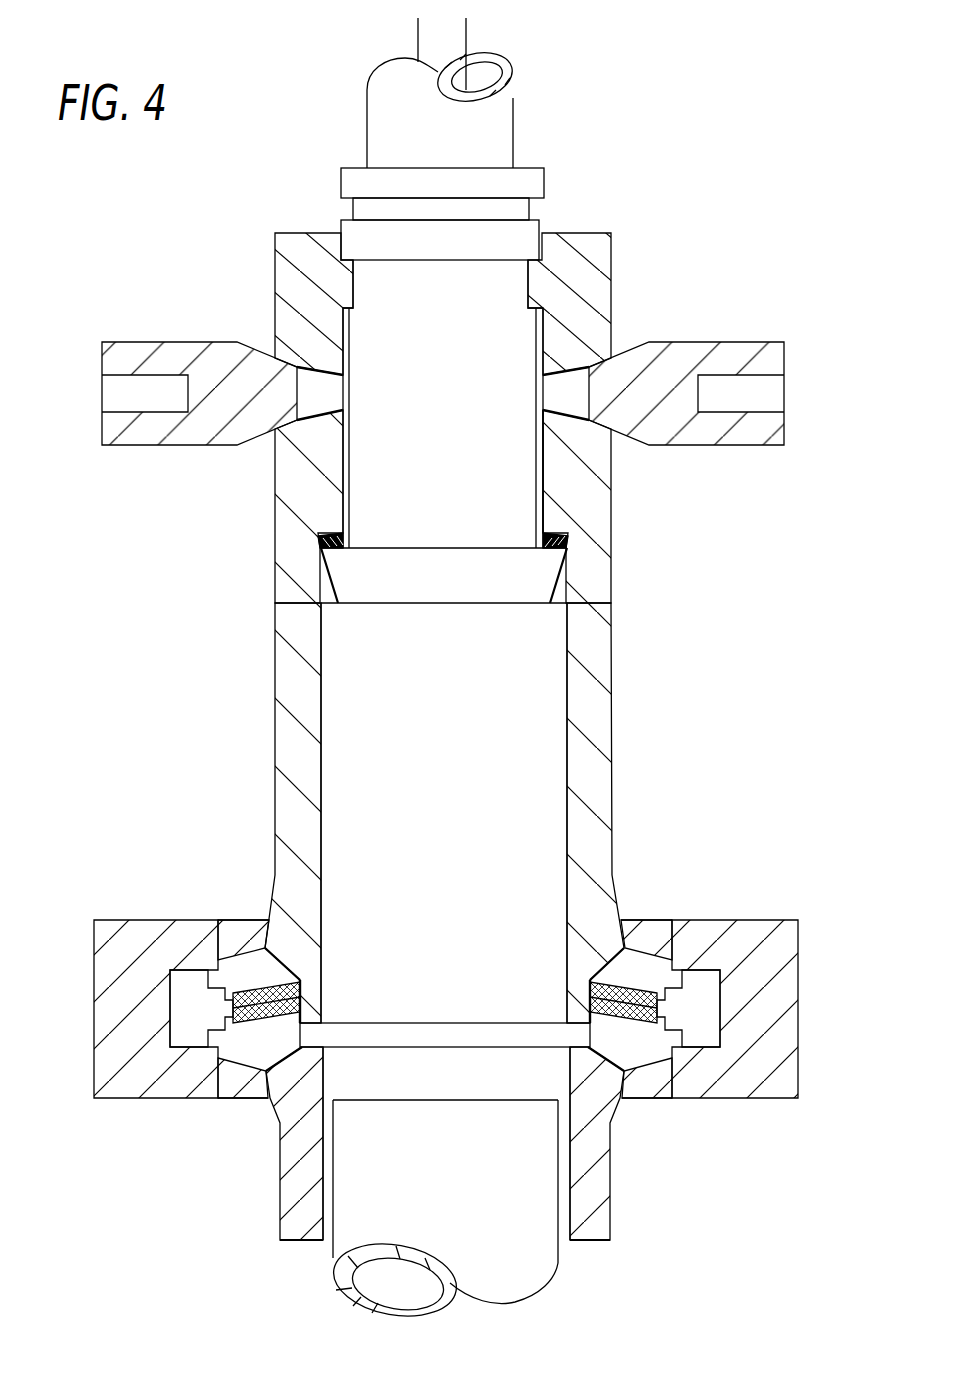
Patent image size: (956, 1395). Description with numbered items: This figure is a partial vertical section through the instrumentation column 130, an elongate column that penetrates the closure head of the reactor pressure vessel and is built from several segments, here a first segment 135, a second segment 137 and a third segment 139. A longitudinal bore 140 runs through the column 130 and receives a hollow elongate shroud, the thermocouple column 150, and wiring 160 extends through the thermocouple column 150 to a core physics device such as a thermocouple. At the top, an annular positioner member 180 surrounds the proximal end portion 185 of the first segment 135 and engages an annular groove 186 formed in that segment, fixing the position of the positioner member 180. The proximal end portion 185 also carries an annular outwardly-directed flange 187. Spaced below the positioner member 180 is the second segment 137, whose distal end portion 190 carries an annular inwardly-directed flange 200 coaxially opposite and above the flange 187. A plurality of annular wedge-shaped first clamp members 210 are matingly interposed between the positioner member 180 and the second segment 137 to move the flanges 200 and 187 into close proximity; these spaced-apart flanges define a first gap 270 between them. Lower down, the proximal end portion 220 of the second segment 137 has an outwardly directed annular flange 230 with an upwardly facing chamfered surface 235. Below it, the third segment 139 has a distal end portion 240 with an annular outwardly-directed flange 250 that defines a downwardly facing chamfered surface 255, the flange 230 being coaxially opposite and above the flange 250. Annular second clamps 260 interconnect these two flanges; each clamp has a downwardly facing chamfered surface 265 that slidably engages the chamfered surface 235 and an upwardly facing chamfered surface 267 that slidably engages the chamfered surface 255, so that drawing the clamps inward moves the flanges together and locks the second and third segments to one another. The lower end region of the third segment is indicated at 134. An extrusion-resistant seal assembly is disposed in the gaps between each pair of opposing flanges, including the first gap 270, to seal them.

The instrumentation column 130 is at (730, 202).
The lower end of sleeve 134 is at (296, 1224).
The first segment 135 is at (500, 119).
The second segment 137 is at (292, 745).
The third segment 139 is at (290, 1182).
The longitudinal bore 140 is at (556, 741).
The thermocouple column 150 is at (528, 1284).
The wiring 160 is at (467, 33).
The positioner member 180 is at (598, 279).
The proximal end portion 185 is at (358, 176).
The annular groove 186 is at (360, 282).
The flange 187 is at (348, 589).
The distal end portion 190 is at (596, 488).
The flange 200 is at (560, 517).
The first clamp members 210 is at (745, 347).
The proximal end portion 220 is at (600, 851).
The flange 230 is at (640, 968).
The chamfered surface 235 is at (250, 945).
The distal end portion 240 is at (588, 1210).
The flange 250 is at (238, 1053).
The chamfered surface 255 is at (252, 1052).
The second clamps 260 is at (105, 947).
The chamfered surface 265 is at (185, 985).
The chamfered surface 267 is at (178, 1038).
The first gap 270 is at (338, 532).